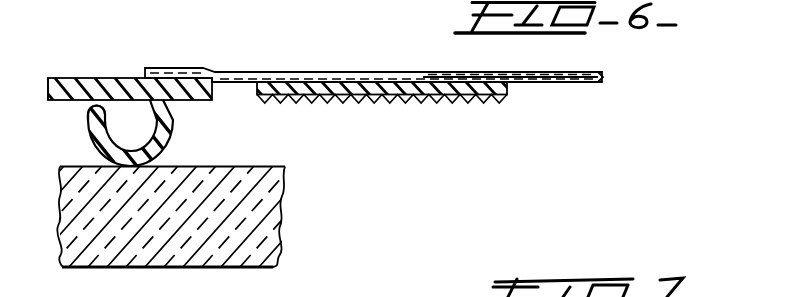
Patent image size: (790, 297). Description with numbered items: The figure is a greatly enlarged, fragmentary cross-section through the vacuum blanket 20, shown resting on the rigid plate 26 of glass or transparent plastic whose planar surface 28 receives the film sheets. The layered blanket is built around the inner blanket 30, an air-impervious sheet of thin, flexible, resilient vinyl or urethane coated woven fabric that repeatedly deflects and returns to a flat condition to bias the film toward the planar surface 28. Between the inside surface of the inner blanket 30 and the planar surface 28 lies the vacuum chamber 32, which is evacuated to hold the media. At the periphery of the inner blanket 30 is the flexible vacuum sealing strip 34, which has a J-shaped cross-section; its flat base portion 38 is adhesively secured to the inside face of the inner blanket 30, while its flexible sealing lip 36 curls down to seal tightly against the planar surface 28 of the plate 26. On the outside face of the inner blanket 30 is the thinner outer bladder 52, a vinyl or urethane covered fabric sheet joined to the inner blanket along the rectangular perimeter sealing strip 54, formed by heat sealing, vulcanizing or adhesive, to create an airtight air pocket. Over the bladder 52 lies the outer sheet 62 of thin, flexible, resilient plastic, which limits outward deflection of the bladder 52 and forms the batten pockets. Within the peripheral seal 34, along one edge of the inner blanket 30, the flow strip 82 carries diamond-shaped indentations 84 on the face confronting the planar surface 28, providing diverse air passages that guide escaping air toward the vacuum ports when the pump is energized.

The vacuum blanket 20 is at (363, 176).
The rigid plate 26 is at (183, 257).
The planar surface 28 is at (56, 166).
The inner blanket 30 is at (96, 78).
The vacuum chamber 32 is at (293, 145).
The vacuum sealing strip 34 is at (184, 118).
The sealing lip 36 is at (88, 131).
The base portion 38 is at (46, 79).
The outer bladder 52 is at (381, 73).
The perimeter sealing strip 54 is at (603, 78).
The outer sheet 62 is at (495, 72).
The flow strip 82 is at (508, 89).
The diamond-shaped indentations 84 is at (398, 103).